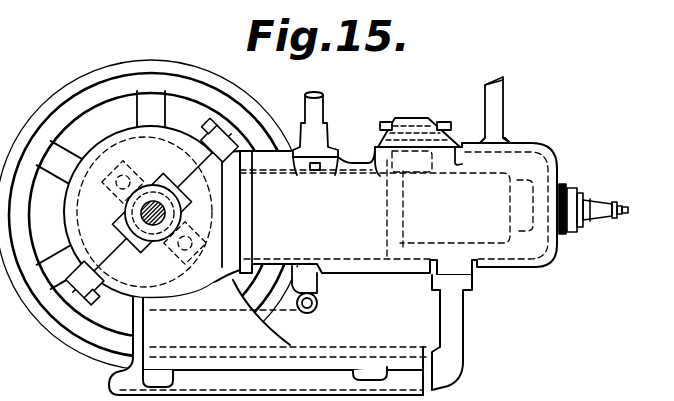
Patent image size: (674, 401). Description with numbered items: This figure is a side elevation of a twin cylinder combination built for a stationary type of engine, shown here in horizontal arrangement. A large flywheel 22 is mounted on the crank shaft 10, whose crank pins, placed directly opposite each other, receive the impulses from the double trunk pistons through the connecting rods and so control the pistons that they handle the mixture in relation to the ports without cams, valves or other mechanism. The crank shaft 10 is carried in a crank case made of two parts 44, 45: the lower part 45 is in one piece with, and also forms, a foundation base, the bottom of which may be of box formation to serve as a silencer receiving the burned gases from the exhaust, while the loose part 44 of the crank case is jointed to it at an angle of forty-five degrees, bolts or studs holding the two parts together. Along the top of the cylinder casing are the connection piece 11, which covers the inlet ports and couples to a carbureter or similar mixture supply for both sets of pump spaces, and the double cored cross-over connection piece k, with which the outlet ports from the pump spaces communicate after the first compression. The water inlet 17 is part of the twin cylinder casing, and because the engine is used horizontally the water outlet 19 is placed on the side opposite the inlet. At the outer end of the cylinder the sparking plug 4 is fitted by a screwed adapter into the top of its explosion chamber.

The flywheel 22 is at (110, 75).
The loose part of the crank case 44 is at (87, 212).
The lower part of the crank case 45 is at (127, 280).
The crank shaft 10 is at (165, 213).
The connection piece 11 is at (321, 128).
The double cored cross-over connection piece k is at (410, 118).
The water outlet 19 is at (502, 139).
The sparking plug 4 is at (585, 199).
The water inlet 17 is at (318, 297).